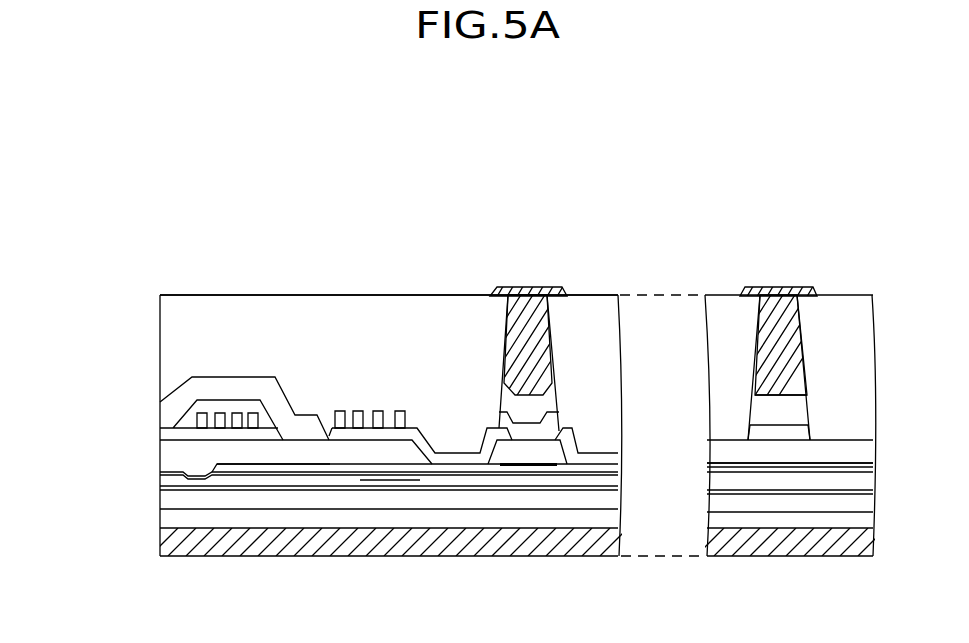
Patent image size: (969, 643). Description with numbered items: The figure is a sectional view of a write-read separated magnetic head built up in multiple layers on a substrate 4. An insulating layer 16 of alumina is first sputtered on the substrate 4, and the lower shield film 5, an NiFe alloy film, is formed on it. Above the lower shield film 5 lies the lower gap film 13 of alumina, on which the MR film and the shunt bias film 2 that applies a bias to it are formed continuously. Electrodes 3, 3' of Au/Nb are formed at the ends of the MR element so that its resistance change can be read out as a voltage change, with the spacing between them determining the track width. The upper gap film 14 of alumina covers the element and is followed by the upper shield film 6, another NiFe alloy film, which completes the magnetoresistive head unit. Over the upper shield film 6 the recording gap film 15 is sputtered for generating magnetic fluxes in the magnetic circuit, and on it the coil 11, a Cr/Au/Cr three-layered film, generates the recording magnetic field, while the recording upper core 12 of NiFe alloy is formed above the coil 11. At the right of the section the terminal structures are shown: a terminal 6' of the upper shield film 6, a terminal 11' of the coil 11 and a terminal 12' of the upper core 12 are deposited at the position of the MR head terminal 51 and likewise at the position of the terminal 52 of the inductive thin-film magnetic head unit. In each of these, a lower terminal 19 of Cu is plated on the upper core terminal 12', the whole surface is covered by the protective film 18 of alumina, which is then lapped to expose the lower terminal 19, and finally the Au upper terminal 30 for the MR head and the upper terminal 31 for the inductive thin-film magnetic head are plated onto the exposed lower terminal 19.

The shunt bias film 2 is at (160, 482).
The electrode 3 is at (285, 548).
The electrode 3' is at (380, 541).
The substrate 4 is at (212, 556).
The lower shield film 5 is at (160, 508).
The upper shield film 6 is at (478, 418).
The terminal of the upper shield film 6' is at (719, 479).
The coil 11 is at (301, 376).
The terminal of the coil 11' is at (684, 420).
The recording upper core 12 is at (198, 351).
The terminal of the upper core 12' is at (653, 390).
The lower gap film 13 is at (475, 367).
The upper gap film 14 is at (160, 472).
The recording gap film 15 is at (160, 432).
The insulating layer 16 is at (160, 523).
The protective film 18 is at (160, 312).
The lower terminal 19 is at (760, 341).
The upper terminal for the MR head 30 is at (527, 287).
The upper terminal for the inductive thin-film magnetic head 31 is at (773, 287).
The MR head terminal 51 is at (492, 225).
The terminal of the inductive thin-film magnetic head unit 52 is at (740, 228).